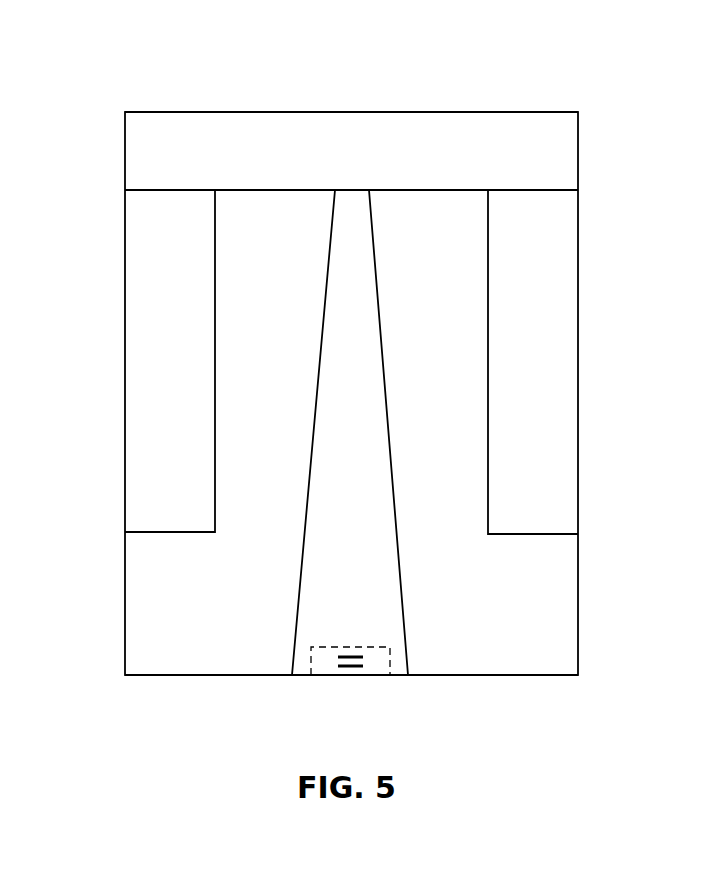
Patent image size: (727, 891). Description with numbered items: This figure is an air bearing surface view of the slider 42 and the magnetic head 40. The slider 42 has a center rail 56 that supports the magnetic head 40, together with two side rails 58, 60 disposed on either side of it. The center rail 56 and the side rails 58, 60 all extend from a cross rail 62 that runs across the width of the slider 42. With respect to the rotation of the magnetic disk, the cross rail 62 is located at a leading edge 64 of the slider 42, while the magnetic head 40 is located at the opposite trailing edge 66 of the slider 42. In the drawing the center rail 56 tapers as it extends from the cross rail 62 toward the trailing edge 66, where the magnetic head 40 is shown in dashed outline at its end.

The slider 42 is at (124, 621).
The cross rail 62 is at (270, 125).
The leading edge 64 is at (455, 112).
The side rail 58 is at (142, 270).
The side rail 60 is at (562, 275).
The center rail 56 is at (337, 305).
The magnetic head 40 is at (328, 676).
The trailing edge 66 is at (473, 676).